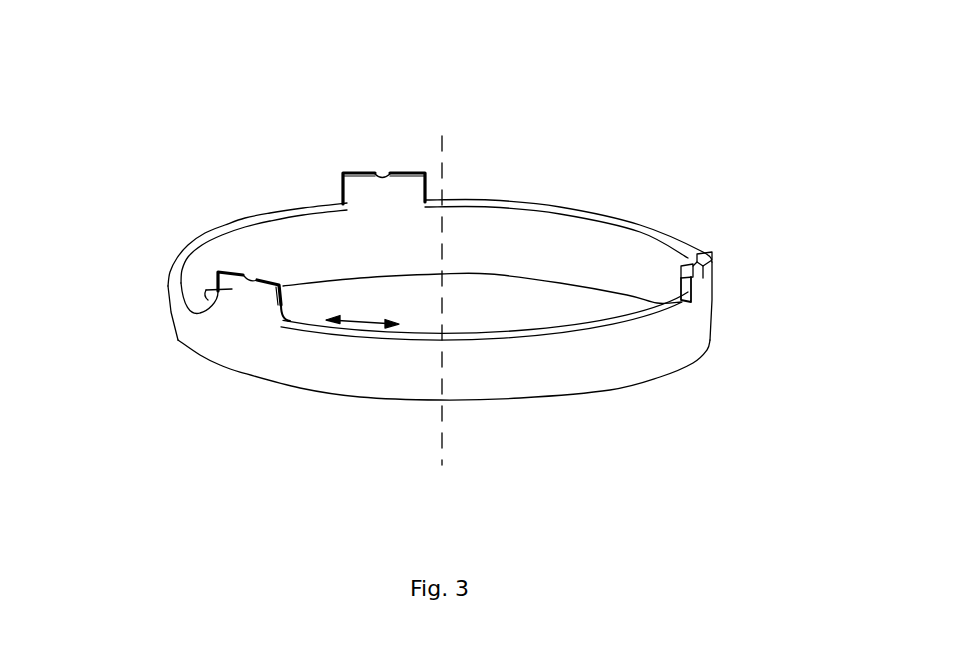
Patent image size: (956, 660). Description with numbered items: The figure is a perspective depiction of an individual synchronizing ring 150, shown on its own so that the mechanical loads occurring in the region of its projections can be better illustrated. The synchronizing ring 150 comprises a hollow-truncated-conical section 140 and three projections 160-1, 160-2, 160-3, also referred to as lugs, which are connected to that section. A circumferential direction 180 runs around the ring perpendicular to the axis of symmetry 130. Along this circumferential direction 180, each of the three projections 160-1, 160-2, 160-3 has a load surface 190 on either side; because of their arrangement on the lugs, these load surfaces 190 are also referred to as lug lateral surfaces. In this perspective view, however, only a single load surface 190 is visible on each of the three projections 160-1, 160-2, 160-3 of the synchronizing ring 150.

The synchronizing ring 150 is at (757, 60).
The hollow-truncated-conical section 140 is at (680, 350).
The axis of symmetry 130 is at (442, 462).
The circumferential direction 180 is at (357, 325).
The projection 160-1 is at (703, 273).
The projection 160-2 is at (407, 172).
The projection 160-3 is at (206, 290).
The load surface 190 is at (342, 174).